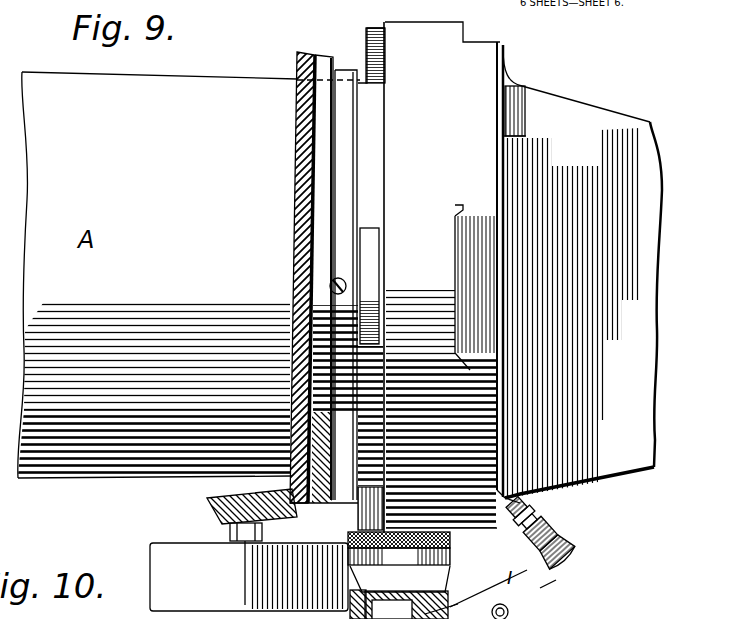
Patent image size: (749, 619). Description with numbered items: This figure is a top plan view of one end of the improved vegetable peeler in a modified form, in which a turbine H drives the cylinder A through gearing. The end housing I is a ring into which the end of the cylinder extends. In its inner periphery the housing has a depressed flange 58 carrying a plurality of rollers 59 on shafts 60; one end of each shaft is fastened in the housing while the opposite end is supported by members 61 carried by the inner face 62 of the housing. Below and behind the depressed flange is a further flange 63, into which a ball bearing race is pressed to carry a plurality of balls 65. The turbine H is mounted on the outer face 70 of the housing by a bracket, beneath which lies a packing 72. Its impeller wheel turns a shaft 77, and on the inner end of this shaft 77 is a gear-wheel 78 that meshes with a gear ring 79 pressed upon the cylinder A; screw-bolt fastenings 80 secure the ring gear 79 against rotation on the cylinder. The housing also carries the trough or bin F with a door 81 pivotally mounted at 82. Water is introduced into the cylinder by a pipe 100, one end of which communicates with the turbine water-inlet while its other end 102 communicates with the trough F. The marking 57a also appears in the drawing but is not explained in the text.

The cap plate 57a is at (432, 16).
The members 61 is at (374, 42).
The outer face 70 is at (476, 566).
The door 81 is at (522, 88).
The pivot 82 is at (510, 612).
The gear ring 79 is at (298, 206).
The screw-bolt fastenings 80 is at (330, 285).
The gear-wheel 78 is at (208, 501).
The shaft 77 is at (230, 534).
The shaft 60 is at (334, 614).
The inner face 62 is at (432, 592).
The rollers 59 is at (406, 605).
The packing 72 is at (450, 541).
The depressed flange 58 is at (495, 562).
The flange 63 is at (454, 607).
The balls 65 is at (515, 602).
The pipe 100 is at (566, 568).
The end of the pipe 102 is at (548, 501).